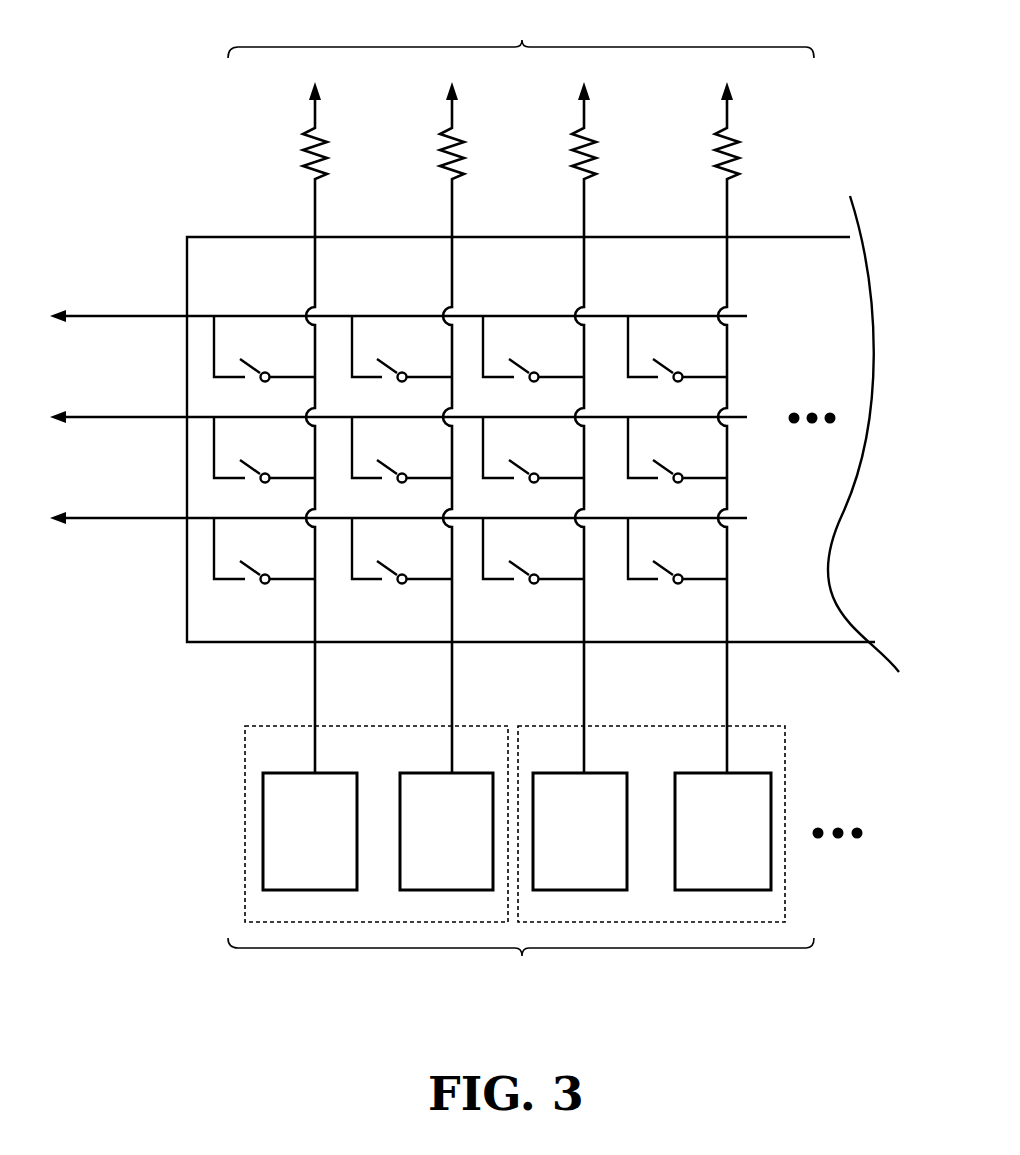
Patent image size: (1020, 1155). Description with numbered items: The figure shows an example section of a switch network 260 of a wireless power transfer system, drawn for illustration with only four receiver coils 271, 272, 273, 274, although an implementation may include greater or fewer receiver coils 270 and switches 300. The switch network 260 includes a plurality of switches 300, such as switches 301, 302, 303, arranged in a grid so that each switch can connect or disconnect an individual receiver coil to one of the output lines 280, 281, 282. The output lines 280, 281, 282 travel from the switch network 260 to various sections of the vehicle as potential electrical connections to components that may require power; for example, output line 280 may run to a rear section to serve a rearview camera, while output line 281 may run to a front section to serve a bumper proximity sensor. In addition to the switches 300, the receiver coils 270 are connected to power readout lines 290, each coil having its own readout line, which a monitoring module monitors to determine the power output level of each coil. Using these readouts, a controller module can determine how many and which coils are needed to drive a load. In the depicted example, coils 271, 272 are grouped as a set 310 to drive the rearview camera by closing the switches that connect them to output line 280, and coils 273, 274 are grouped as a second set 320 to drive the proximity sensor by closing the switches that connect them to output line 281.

The switch network 260 is at (213, 236).
The receiver coils 270 is at (521, 963).
The receiver coil 271 is at (291, 857).
The receiver coil 272 is at (427, 857).
The receiver coil 273 is at (561, 857).
The receiver coil 274 is at (704, 857).
The output line 280 is at (91, 314).
The output line 281 is at (91, 415).
The output line 282 is at (91, 516).
The power readout lines 290 is at (521, 393).
The switches 300 is at (197, 554).
The switch 301 is at (683, 377).
The switch 302 is at (683, 478).
The switch 303 is at (683, 579).
The set 310 is at (245, 750).
The second set 320 is at (786, 748).